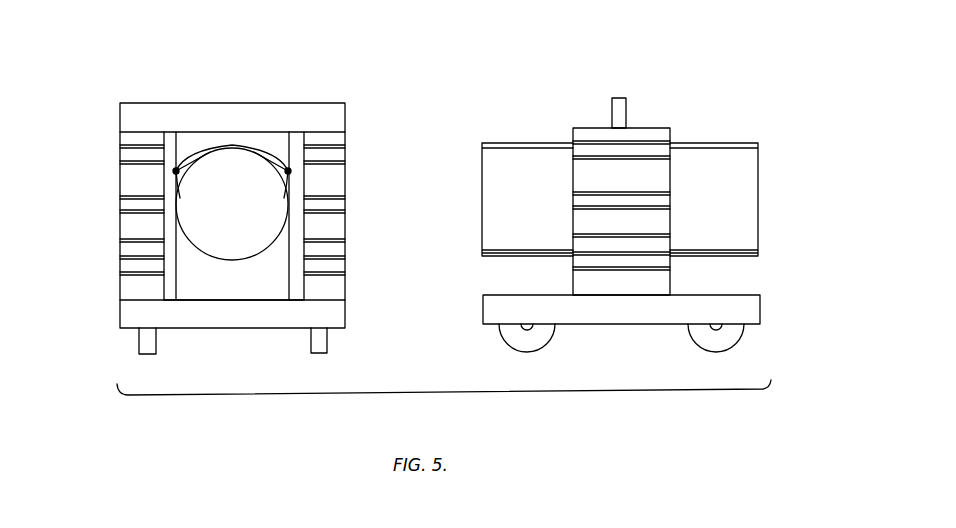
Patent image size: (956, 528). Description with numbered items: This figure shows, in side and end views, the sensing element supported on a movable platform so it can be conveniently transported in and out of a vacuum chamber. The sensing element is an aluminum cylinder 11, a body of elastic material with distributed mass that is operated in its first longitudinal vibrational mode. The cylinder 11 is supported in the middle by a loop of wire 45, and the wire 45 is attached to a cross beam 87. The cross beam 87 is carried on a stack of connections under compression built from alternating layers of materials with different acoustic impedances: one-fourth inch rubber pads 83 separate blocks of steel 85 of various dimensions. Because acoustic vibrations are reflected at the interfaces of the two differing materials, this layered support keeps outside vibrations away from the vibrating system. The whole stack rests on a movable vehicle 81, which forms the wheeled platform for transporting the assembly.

The aluminum cylinder 11 is at (234, 243).
The loop of wire 45 is at (287, 148).
The movable vehicle 81 is at (130, 318).
The rubber pads 83 is at (120, 147).
The blocks of steel 85 is at (120, 138).
The cross beam 87 is at (325, 107).